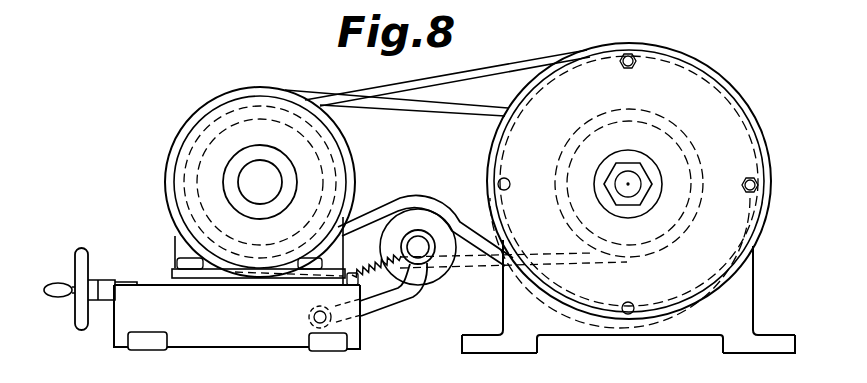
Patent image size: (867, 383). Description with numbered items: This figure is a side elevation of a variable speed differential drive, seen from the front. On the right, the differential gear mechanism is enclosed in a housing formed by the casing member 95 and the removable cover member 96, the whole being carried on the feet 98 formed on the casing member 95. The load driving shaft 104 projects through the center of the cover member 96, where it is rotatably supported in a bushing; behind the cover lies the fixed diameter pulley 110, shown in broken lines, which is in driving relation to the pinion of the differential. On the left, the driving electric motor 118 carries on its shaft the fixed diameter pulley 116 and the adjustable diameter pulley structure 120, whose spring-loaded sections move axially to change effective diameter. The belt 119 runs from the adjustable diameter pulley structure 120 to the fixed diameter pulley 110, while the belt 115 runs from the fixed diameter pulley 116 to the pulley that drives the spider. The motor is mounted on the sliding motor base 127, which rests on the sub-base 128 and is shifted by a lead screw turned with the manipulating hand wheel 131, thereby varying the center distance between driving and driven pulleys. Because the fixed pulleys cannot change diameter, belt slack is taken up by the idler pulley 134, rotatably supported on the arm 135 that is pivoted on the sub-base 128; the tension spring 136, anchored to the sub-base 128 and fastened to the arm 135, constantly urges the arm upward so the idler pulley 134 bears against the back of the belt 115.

The cover member 96 is at (723, 117).
The casing member 95 is at (748, 290).
The feet 98 is at (481, 340).
The load driving shaft 104 is at (620, 188).
The fixed diameter pulley 110 is at (563, 148).
The belt 119 is at (418, 110).
The adjustable diameter pulley structure 120 is at (178, 141).
The driving electric motor 118 is at (175, 178).
The fixed diameter pulley 116 is at (186, 187).
The belt 115 is at (395, 207).
The idler pulley 134 is at (393, 232).
The arm 135 is at (418, 292).
The tension spring 136 is at (372, 276).
The sliding motor base 127 is at (173, 267).
The sub-base 128 is at (359, 327).
The manipulating hand wheel 131 is at (78, 257).